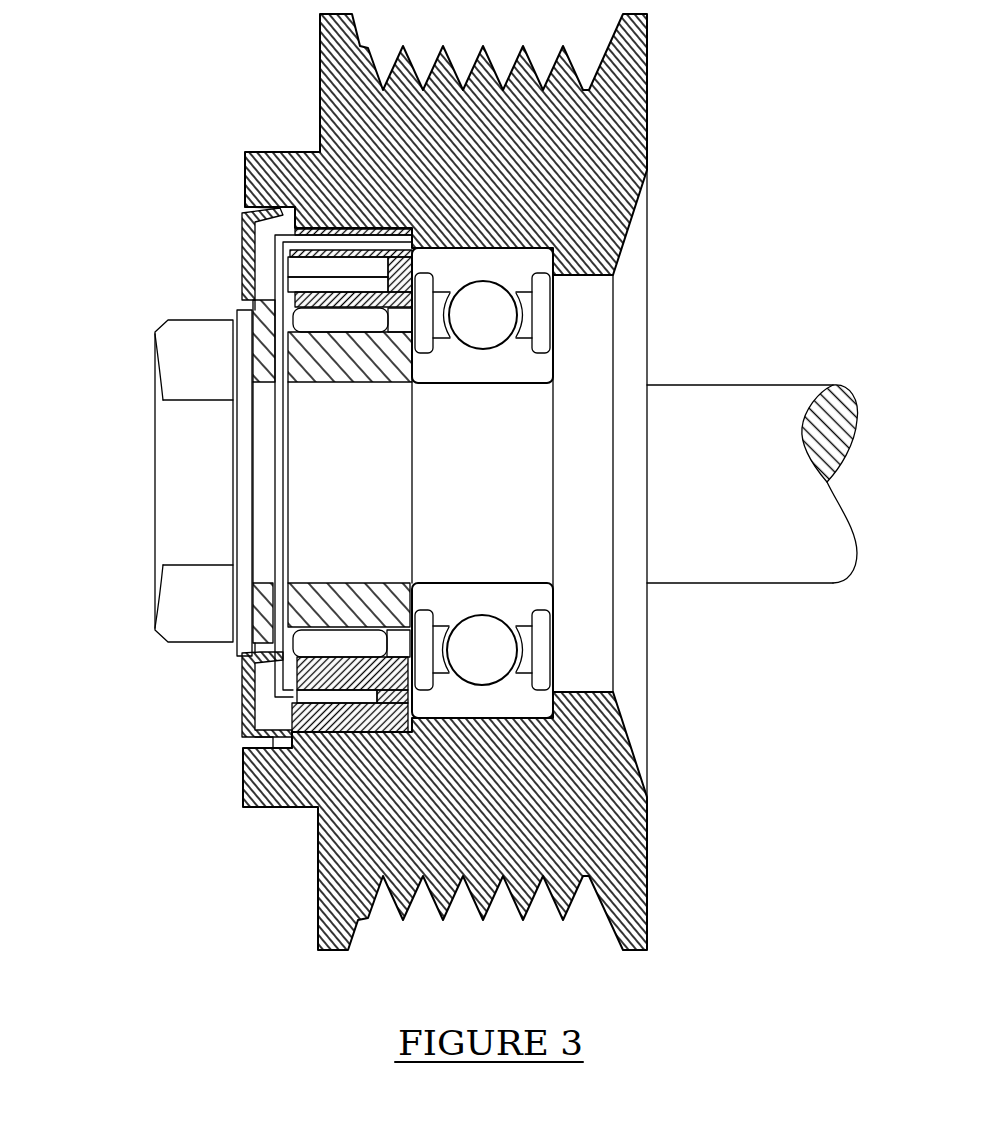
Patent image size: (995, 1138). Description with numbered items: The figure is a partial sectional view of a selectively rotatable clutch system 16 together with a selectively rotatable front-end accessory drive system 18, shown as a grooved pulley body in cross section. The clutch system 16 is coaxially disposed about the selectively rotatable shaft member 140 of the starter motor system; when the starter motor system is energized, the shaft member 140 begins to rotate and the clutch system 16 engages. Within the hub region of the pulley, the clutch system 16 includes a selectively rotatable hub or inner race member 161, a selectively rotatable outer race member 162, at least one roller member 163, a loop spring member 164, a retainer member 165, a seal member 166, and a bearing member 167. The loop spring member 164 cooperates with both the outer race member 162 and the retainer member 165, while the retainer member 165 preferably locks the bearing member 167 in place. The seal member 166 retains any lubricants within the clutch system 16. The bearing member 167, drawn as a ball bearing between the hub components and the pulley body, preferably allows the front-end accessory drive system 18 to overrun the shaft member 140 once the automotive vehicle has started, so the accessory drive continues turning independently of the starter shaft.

The clutch system 16 is at (140, 55).
The front-end accessory drive system 18 is at (363, 120).
The shaft member 140 is at (752, 420).
The hub or inner race member 161 is at (180, 365).
The outer race member 162 is at (328, 725).
The roller member 163 is at (293, 615).
The loop spring member 164 is at (273, 250).
The retainer member 165 is at (293, 697).
The seal member 166 is at (243, 706).
The bearing member 167 is at (503, 308).